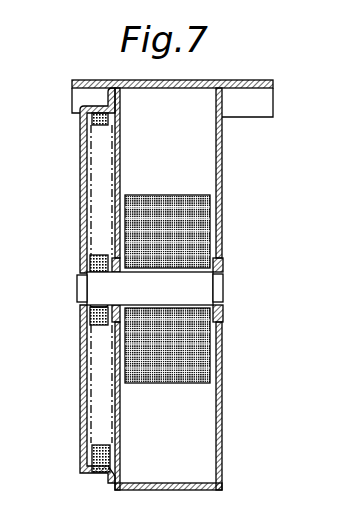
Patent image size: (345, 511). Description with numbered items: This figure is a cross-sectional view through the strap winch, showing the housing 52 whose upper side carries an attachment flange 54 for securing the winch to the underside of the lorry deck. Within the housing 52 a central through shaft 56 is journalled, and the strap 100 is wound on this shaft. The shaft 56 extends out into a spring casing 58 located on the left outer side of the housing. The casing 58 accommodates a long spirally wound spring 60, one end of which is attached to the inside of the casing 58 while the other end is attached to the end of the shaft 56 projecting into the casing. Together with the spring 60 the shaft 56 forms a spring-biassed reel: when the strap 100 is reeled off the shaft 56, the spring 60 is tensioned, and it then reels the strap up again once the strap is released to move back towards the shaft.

The housing 52 is at (222, 173).
The attachment flange 54 is at (260, 98).
The through shaft 56 is at (200, 289).
The spring casing 58 is at (80, 196).
The spirally wound spring 60 is at (107, 255).
The strap 100 is at (210, 200).